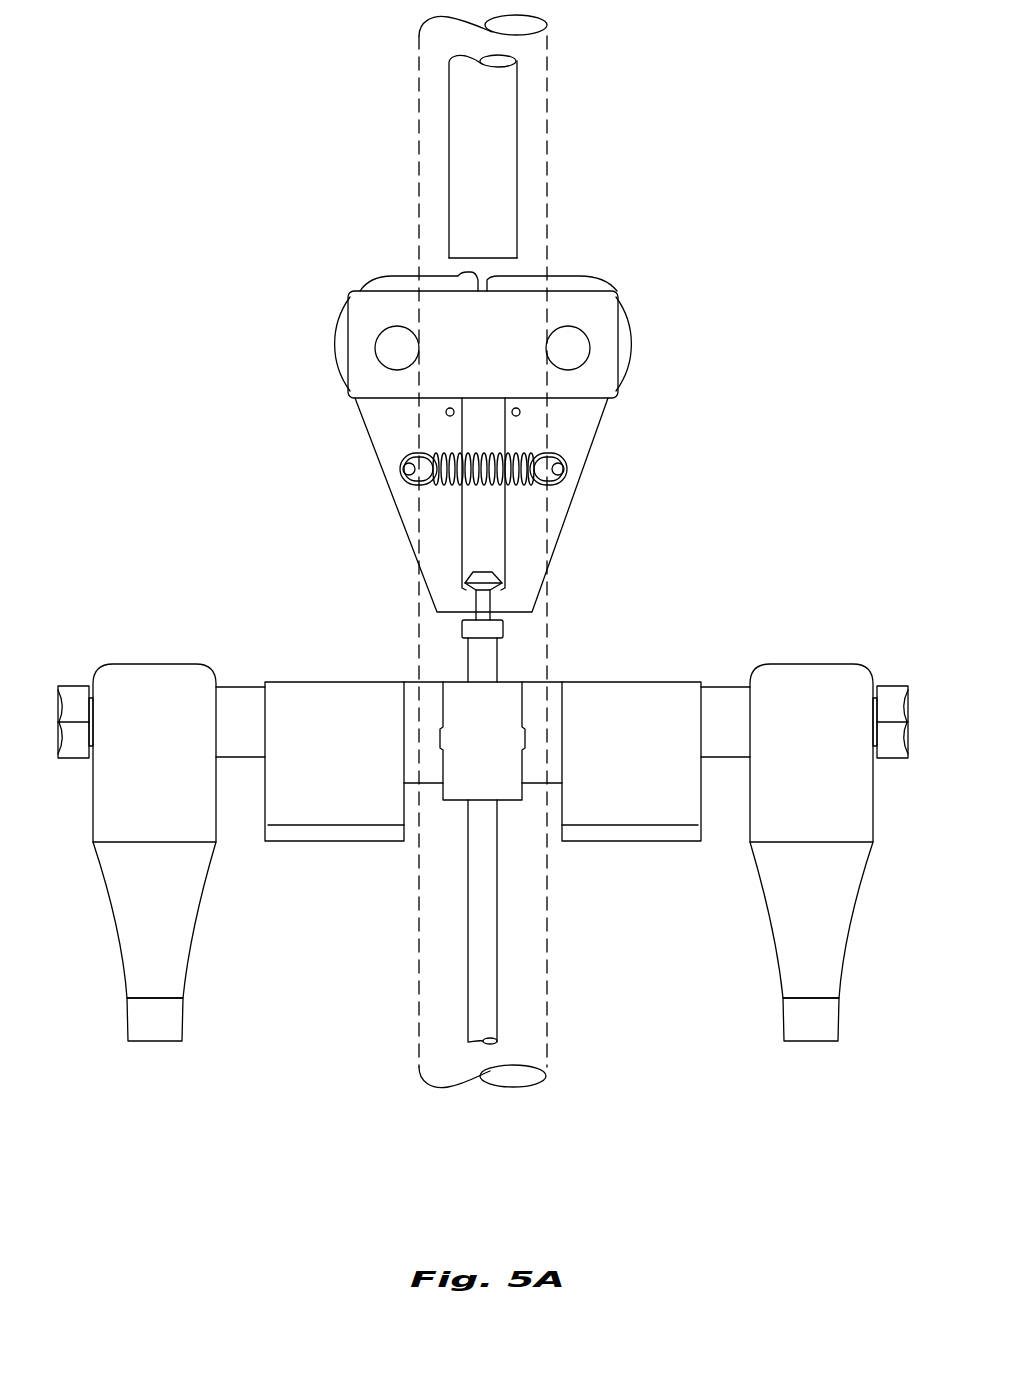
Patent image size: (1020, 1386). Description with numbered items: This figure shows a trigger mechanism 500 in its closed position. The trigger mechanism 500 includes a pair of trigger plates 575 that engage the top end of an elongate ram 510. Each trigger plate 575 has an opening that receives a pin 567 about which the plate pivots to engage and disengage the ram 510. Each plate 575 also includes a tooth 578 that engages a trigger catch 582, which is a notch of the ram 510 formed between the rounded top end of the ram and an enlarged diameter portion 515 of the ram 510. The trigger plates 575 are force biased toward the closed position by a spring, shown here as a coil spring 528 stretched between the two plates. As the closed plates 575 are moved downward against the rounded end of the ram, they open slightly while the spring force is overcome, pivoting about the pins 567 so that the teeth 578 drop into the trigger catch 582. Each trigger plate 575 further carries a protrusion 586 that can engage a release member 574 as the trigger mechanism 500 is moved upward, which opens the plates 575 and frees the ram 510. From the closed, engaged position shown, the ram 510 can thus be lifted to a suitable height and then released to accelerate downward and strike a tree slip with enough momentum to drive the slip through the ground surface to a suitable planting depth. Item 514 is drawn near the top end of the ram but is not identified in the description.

The trigger mechanism 500 is at (263, 190).
The release member 574 is at (505, 157).
The protrusion 586 is at (502, 275).
The pin 567 is at (583, 347).
The trigger plate 575 is at (594, 434).
The tooth 578 is at (508, 603).
The coil spring 528 is at (507, 487).
The pin head 514 is at (482, 569).
The trigger catch 582 is at (466, 605).
The enlarged diameter portion 515 is at (463, 634).
The elongate ram 510 is at (499, 945).